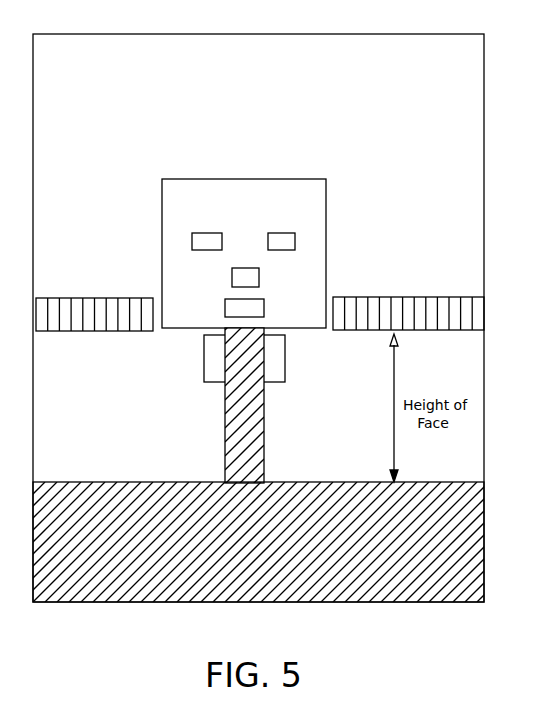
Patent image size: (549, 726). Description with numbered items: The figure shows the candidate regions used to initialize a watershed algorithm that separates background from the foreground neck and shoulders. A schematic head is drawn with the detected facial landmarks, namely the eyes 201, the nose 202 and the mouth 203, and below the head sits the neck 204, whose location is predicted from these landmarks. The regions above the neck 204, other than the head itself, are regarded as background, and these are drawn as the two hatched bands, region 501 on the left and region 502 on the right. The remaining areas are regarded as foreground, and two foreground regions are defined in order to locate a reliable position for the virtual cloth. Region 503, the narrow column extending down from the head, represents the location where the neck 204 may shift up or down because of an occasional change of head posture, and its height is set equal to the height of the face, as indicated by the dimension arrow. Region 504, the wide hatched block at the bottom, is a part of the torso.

The eyes 201 is at (205, 232).
The nose 202 is at (242, 275).
The mouth 203 is at (252, 309).
The neck 204 is at (277, 368).
The background region 501 is at (60, 331).
The background region 502 is at (420, 330).
The foreground region 503 is at (253, 417).
The foreground region 504 is at (163, 492).